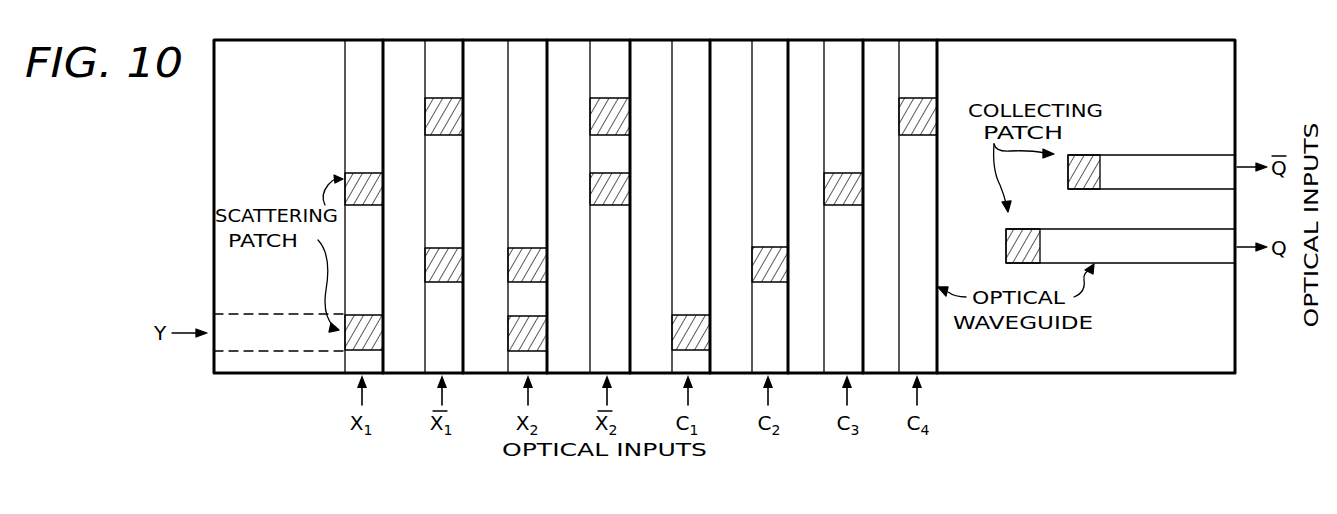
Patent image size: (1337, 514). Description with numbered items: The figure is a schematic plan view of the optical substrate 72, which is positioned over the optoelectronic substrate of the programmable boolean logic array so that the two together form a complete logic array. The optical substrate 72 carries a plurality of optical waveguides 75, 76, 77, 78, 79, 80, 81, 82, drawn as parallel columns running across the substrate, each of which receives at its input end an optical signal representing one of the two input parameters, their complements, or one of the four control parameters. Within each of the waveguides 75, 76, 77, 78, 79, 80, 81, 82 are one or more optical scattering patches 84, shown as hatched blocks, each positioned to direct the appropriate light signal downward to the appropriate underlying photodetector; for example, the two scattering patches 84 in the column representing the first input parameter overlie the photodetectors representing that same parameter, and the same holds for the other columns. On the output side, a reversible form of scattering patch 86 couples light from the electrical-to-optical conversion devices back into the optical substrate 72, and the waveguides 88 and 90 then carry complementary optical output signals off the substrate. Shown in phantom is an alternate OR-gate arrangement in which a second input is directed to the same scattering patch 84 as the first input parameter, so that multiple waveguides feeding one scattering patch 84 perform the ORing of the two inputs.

The optical substrate 72 is at (275, 53).
The optical waveguide 75 is at (363, 53).
The optical waveguide 76 is at (442, 53).
The optical waveguide 77 is at (530, 53).
The optical waveguide 78 is at (616, 52).
The optical waveguide 79 is at (690, 52).
The optical waveguide 80 is at (763, 52).
The optical waveguide 81 is at (836, 53).
The optical waveguide 82 is at (909, 53).
The optical scattering patch 84 is at (385, 204).
The reversible scattering patch 86 is at (1066, 166).
The output waveguide 88 is at (1141, 162).
The output waveguide 90 is at (1153, 256).